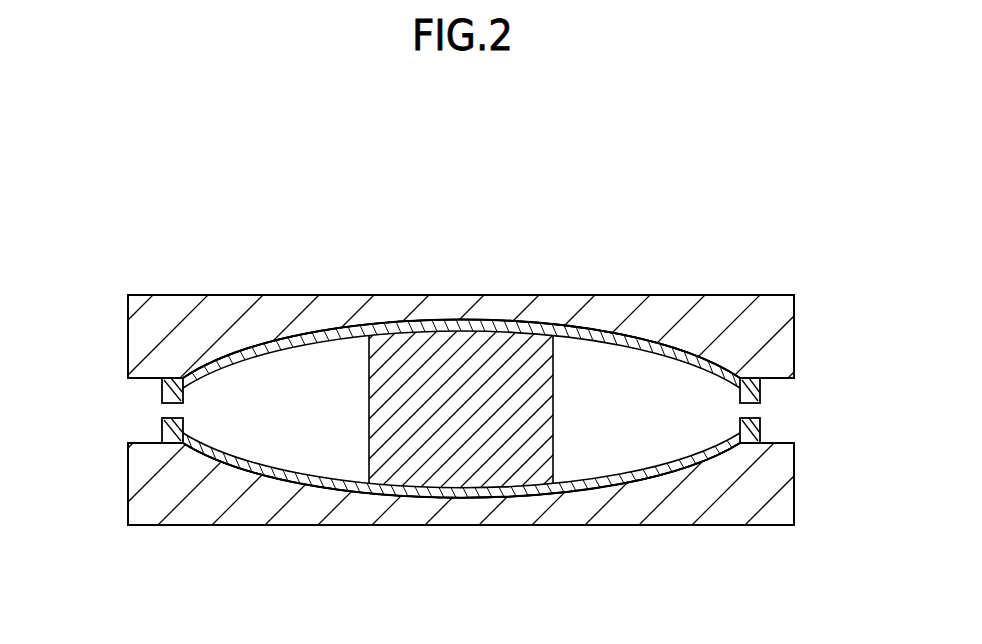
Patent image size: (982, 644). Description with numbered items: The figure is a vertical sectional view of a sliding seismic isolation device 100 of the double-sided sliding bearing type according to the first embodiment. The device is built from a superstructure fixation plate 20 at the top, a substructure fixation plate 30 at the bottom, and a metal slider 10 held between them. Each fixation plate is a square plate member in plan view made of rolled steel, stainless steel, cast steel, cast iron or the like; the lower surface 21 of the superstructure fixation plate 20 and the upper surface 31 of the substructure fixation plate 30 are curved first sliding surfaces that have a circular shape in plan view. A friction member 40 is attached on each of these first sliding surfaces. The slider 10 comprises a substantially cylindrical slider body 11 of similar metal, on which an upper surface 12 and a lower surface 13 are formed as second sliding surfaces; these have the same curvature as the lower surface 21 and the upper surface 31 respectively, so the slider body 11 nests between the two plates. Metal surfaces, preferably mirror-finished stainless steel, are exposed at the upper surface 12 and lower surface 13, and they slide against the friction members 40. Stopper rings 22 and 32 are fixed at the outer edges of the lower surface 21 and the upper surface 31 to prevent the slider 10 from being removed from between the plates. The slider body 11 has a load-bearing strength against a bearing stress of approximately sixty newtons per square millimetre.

The sliding seismic isolation device 100 is at (514, 190).
The slider 10 is at (561, 426).
The slider body 11 is at (386, 415).
The upper surface 12 is at (410, 327).
The lower surface 13 is at (433, 494).
The superstructure fixation plate 20 is at (757, 300).
The lower surface 21 is at (327, 337).
The stopper ring 22 is at (162, 389).
The substructure fixation plate 30 is at (760, 518).
The upper surface 31 is at (328, 487).
The stopper ring 32 is at (162, 429).
The friction member 40 is at (461, 413).